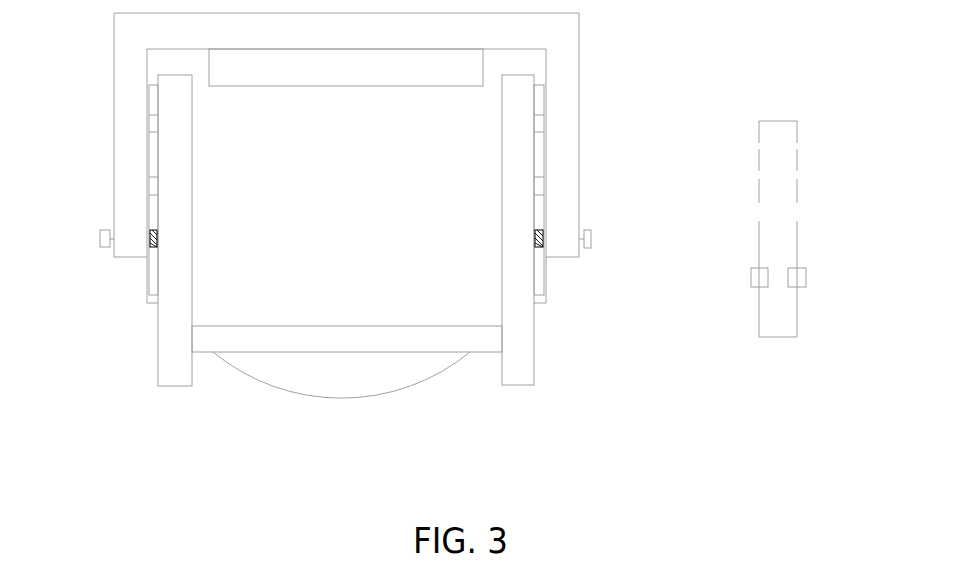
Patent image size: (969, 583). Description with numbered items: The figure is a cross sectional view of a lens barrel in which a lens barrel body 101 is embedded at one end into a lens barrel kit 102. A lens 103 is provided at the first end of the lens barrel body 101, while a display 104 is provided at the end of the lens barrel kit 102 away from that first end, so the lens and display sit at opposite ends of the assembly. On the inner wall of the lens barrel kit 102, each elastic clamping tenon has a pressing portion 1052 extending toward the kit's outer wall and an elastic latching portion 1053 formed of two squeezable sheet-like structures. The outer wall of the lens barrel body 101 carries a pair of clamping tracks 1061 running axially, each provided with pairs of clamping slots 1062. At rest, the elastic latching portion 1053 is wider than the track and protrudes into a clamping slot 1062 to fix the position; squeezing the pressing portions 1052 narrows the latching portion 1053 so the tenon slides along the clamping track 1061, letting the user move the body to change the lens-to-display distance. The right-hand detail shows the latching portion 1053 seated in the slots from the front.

The lens barrel body 101 is at (522, 363).
The lens barrel kit 102 is at (565, 128).
The lens 103 is at (347, 403).
The display 104 is at (345, 75).
The pressing portion 1052 is at (100, 241).
The elastic latching portion 1053 is at (148, 240).
The clamping track 1061 is at (154, 98).
The clamping slots 1062 is at (154, 130).